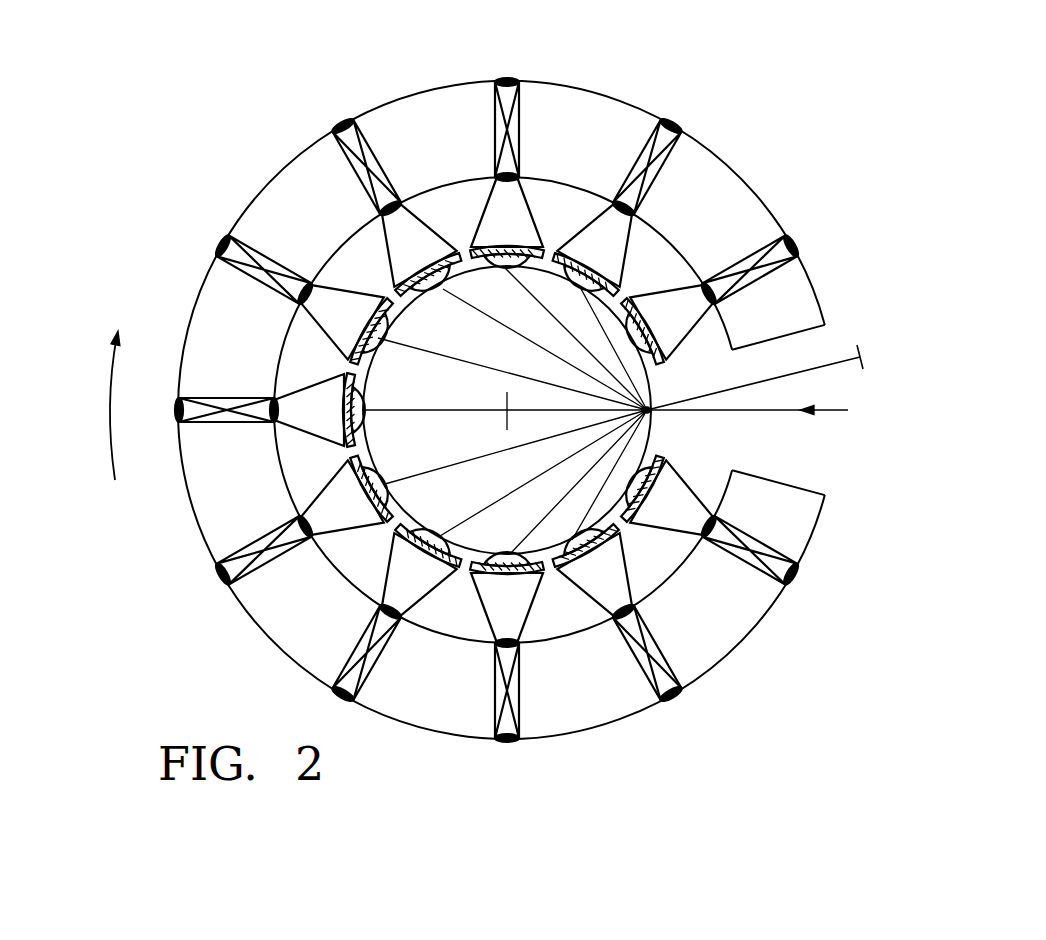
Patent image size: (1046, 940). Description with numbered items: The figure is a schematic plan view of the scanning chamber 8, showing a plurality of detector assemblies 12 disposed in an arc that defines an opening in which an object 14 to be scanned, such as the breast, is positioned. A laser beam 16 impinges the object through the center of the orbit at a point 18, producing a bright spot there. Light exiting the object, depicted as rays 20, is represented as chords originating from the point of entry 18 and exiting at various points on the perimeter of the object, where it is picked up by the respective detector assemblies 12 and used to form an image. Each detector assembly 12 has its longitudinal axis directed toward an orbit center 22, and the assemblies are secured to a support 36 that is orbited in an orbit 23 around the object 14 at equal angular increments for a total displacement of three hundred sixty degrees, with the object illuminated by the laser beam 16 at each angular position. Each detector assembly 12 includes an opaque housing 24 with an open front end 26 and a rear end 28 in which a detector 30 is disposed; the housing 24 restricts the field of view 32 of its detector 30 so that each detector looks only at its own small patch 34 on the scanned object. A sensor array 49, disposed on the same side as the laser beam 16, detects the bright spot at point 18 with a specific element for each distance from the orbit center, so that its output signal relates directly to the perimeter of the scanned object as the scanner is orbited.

The scanning chamber 8 is at (711, 76).
The detector assembly 12 is at (628, 144).
The object 14 is at (607, 514).
The laser beam 16 is at (835, 412).
The point of entry 18 is at (650, 414).
The rays 20 is at (600, 317).
The orbit center 22 is at (505, 407).
The orbit 23 is at (108, 402).
The opaque housing 24 is at (667, 657).
The open front end 26 is at (625, 612).
The rear end 28 is at (655, 682).
The detector 30 is at (678, 700).
The field of view 32 is at (625, 522).
The patch 34 is at (533, 592).
The support 36 is at (826, 325).
The sensor array 49 is at (868, 357).